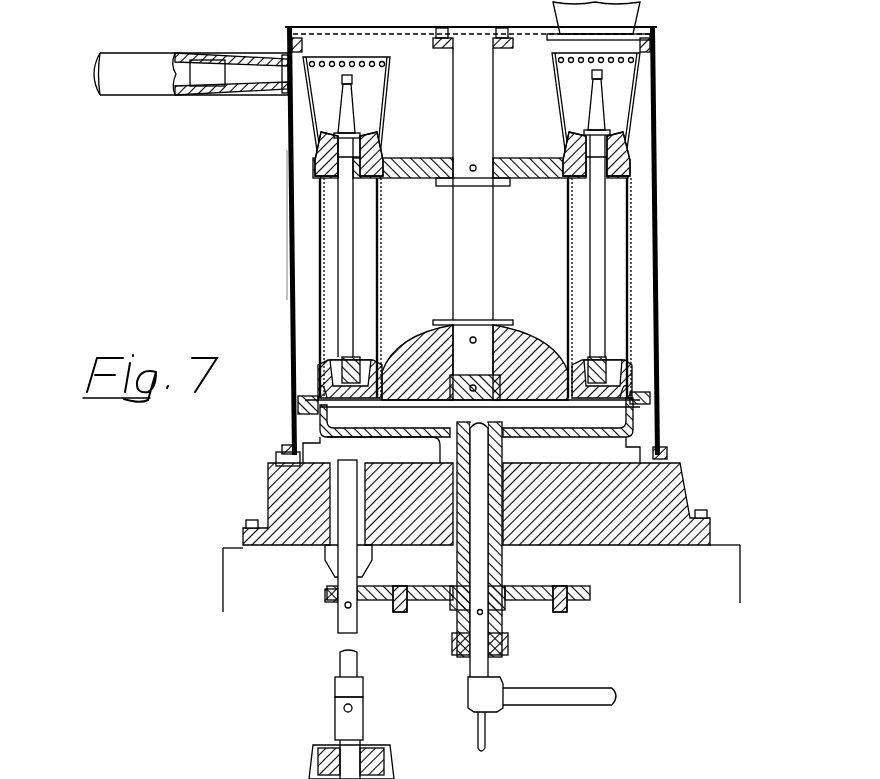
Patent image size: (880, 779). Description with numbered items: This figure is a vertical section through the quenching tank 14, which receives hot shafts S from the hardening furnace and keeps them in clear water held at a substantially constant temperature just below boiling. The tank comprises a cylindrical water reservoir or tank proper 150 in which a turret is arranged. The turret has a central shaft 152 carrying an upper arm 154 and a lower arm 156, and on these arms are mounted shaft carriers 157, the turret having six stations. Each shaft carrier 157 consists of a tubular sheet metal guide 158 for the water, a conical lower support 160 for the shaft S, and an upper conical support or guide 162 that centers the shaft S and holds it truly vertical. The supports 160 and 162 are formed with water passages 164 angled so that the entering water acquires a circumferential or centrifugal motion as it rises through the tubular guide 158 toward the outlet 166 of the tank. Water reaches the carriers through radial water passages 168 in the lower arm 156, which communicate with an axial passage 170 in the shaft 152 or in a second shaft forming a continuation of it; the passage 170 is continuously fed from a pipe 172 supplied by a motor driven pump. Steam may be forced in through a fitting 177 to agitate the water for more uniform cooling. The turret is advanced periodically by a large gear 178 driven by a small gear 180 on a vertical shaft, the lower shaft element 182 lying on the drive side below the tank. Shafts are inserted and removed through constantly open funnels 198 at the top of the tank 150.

The quenching tank 14 is at (287, 212).
The cylindrical water reservoir 150 is at (655, 100).
The central shaft 152 is at (467, 90).
The upper arm 154 is at (515, 168).
The lower arm 156 is at (525, 366).
The shaft carrier 157 is at (360, 209).
The tubular sheet metal guide 158 is at (365, 280).
The conical lower support 160 is at (325, 365).
The upper conical support 162 is at (312, 150).
The water passages 164 is at (368, 345).
The outlet 166 is at (142, 76).
The radial water passages 168 is at (605, 415).
The axial passage 170 is at (488, 522).
The pipe 172 is at (548, 698).
The fitting 177 is at (487, 731).
The large gear 178 is at (592, 591).
The small gear 180 is at (326, 594).
The drive shaft 182 is at (345, 622).
The funnel 198 is at (620, 13).
The shaft S is at (347, 256).